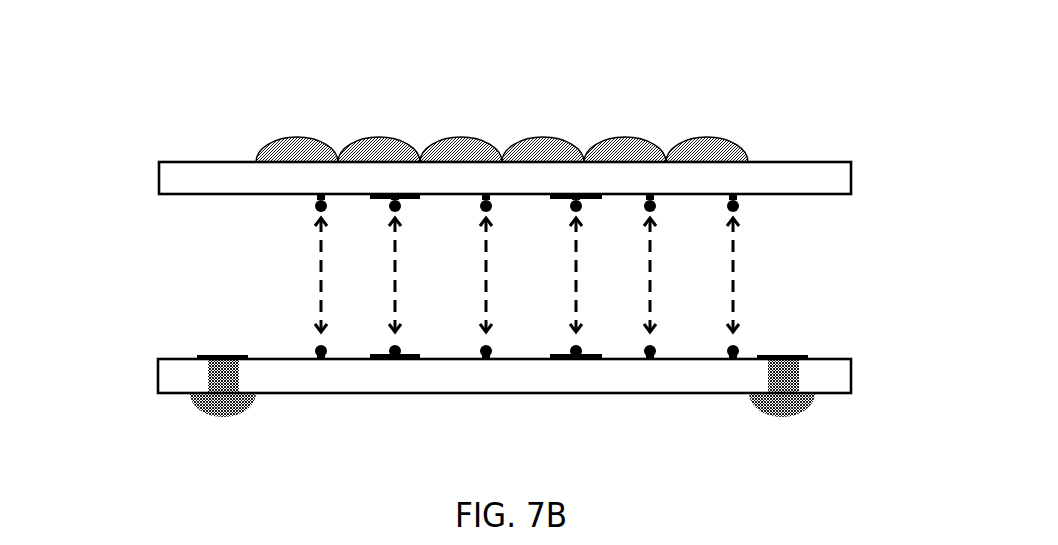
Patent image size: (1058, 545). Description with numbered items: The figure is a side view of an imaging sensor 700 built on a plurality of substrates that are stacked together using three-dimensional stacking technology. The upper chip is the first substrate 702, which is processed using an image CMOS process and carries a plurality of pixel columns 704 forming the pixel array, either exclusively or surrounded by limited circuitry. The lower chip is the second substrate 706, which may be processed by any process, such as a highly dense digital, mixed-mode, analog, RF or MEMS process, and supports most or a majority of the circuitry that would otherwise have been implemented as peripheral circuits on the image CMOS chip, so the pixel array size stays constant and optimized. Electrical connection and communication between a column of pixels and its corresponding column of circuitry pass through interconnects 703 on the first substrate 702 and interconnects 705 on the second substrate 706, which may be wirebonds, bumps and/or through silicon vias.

The imaging sensor 700 is at (122, 147).
The first substrate 702 is at (840, 183).
The interconnects 703 is at (372, 200).
The pixel columns 704 is at (293, 137).
The interconnects 705 is at (380, 361).
The second substrate 706 is at (840, 382).